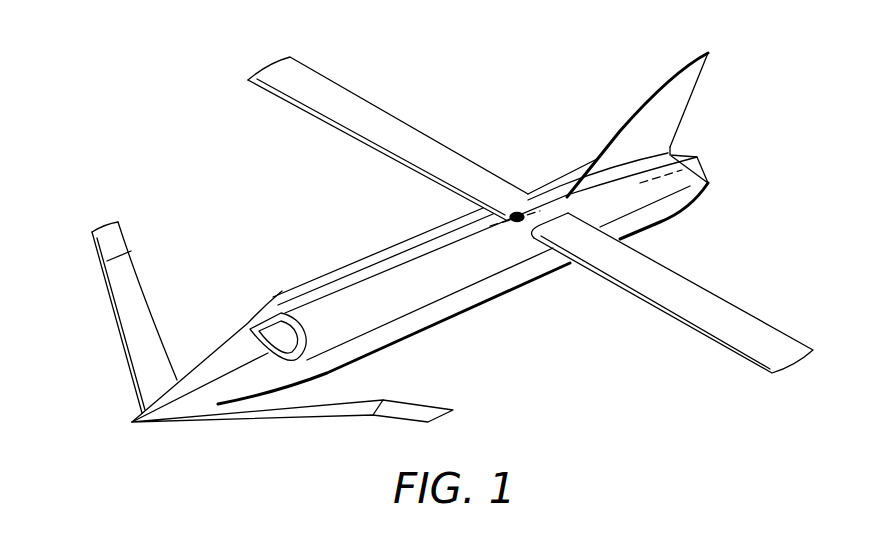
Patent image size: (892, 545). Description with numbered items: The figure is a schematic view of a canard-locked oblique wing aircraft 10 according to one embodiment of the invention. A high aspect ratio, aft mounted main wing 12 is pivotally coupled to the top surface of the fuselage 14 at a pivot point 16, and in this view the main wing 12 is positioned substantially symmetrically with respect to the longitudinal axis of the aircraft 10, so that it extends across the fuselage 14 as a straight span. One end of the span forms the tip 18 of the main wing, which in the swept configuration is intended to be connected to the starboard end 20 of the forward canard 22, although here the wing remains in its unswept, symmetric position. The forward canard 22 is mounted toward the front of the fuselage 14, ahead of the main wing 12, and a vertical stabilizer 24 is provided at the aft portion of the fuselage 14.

The canard-locked oblique wing aircraft 10 is at (513, 121).
The main wing 12 is at (742, 328).
The fuselage 14 is at (423, 297).
The pivot point 16 is at (516, 213).
The tip of the main wing 18 is at (280, 70).
The starboard end of the forward canard 20 is at (107, 232).
The forward canard 22 is at (132, 325).
The vertical stabilizer 24 is at (668, 108).